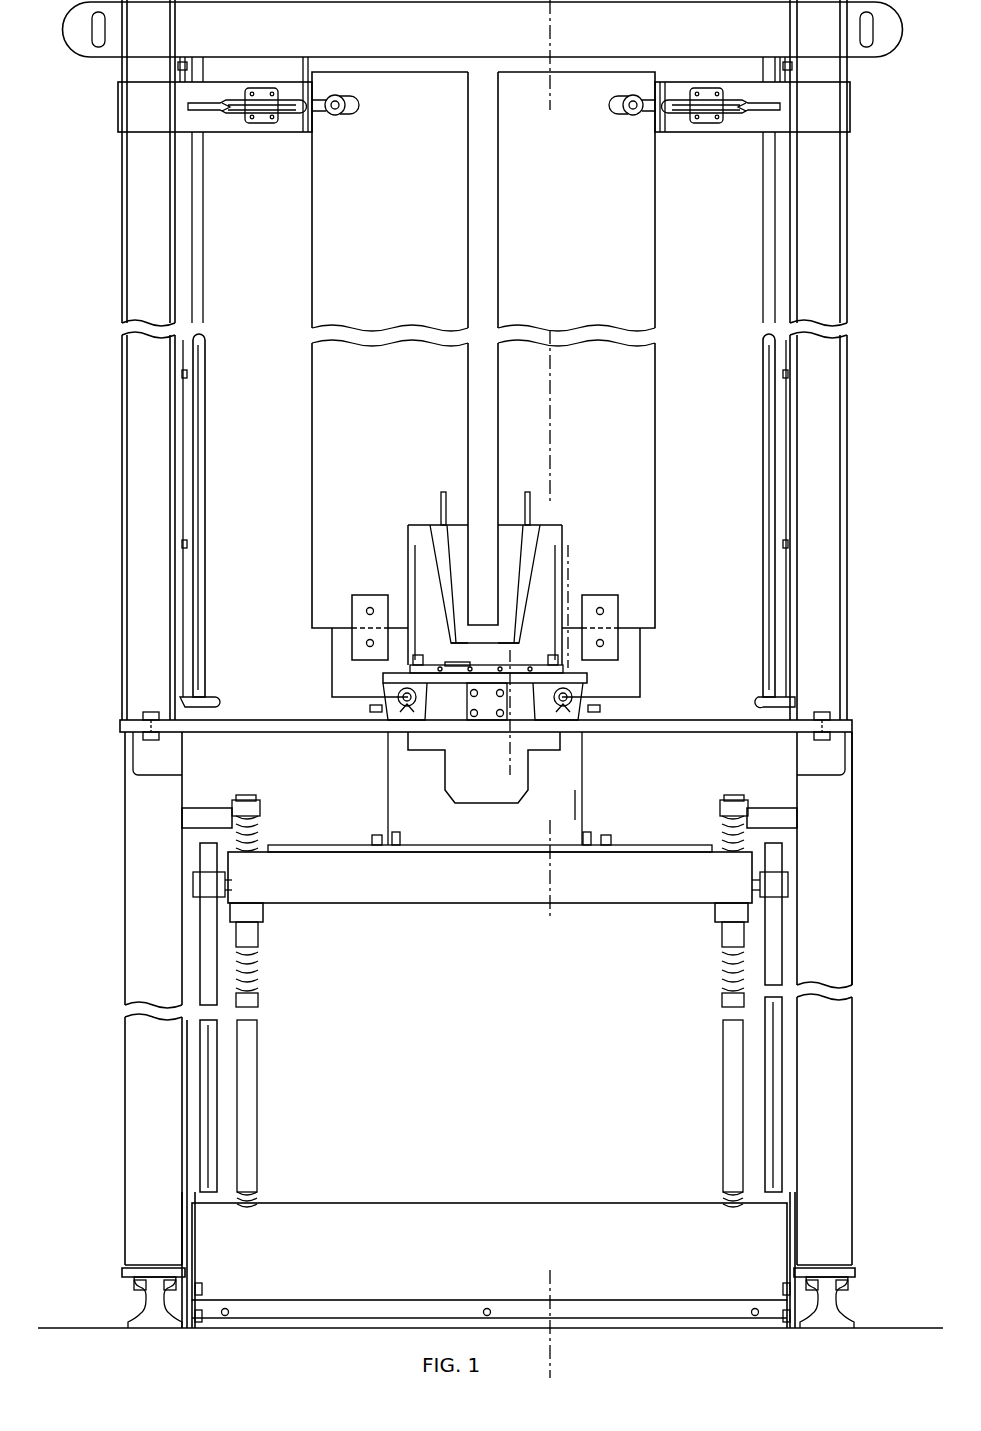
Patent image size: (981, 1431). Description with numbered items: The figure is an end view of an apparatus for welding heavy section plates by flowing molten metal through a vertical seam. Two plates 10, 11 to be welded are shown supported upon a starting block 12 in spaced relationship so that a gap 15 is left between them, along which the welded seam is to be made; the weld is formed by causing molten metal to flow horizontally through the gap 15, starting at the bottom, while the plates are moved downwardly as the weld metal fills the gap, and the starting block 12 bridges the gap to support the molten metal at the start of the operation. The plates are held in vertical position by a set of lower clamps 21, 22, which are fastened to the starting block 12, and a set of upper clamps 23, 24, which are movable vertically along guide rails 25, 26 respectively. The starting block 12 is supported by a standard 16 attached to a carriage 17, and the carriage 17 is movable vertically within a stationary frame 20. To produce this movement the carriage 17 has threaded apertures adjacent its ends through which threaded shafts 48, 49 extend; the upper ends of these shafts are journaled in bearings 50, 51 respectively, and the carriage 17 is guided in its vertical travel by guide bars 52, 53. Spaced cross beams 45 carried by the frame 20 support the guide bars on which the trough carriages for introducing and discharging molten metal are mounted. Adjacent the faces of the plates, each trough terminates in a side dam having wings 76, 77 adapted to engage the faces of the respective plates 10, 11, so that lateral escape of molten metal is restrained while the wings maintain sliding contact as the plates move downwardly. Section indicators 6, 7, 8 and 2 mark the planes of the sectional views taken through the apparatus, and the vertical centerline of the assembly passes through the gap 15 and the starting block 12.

The plate 10 is at (312, 232).
The plate 11 is at (655, 224).
The gap 15 is at (478, 258).
The upper clamp 23 is at (284, 132).
The upper clamp 24 is at (750, 128).
The guide rail 25 is at (205, 410).
The guide rail 26 is at (770, 398).
The lower clamp 21 is at (352, 613).
The lower clamp 22 is at (613, 616).
The starting block 12 is at (332, 661).
The wing 76 is at (418, 555).
The wing 77 is at (560, 544).
The cross beam 45 is at (350, 724).
The standard 16 is at (583, 782).
The carriage 17 is at (616, 848).
The stationary frame 20 is at (838, 833).
The bearing 50 is at (258, 822).
The bearing 51 is at (722, 820).
The threaded shaft 48 is at (258, 975).
The threaded shaft 49 is at (722, 970).
The guide bar 52 is at (215, 1062).
The guide bar 53 is at (770, 1062).
The section line 6- 6 is at (617, 178).
The section line 7- 7 is at (518, 653).
The section line 8- 8 is at (558, 568).
The section line 2- 2 is at (550, 1343).